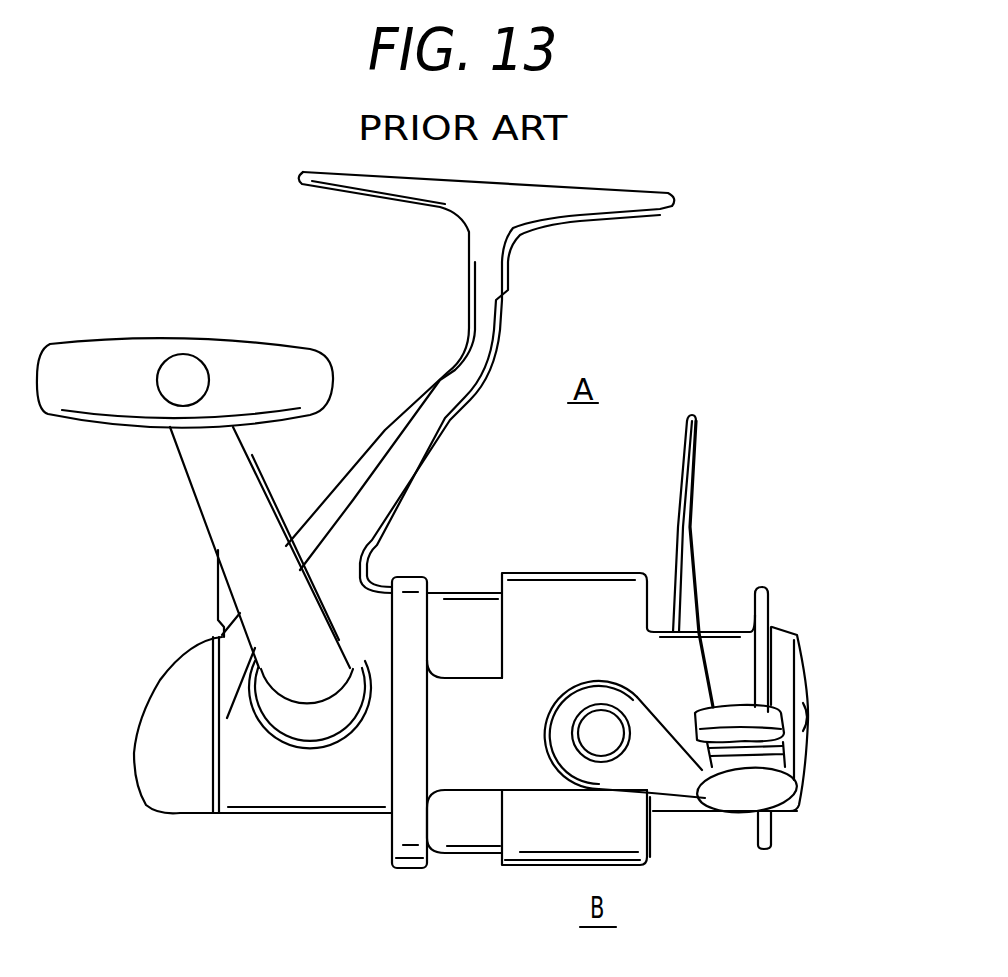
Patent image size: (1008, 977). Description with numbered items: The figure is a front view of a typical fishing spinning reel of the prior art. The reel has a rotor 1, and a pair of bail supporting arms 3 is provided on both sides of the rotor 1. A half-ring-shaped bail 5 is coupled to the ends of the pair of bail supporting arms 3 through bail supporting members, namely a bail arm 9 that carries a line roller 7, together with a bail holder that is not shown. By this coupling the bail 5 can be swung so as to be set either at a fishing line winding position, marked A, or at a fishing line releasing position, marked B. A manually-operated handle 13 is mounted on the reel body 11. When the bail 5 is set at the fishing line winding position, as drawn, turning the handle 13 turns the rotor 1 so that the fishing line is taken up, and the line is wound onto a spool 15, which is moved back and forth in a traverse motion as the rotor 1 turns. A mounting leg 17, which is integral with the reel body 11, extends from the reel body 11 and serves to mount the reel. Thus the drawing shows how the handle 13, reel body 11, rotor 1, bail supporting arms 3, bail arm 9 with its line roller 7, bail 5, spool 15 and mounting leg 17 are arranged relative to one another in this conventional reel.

The rotor 1 is at (468, 598).
The bail supporting arms 3 is at (479, 772).
The bail 5 is at (698, 418).
The line roller 7 is at (757, 752).
The bail arm 9 is at (670, 788).
The reel body 11 is at (277, 797).
The handle 13 is at (208, 468).
The spool 15 is at (729, 643).
The mounting leg 17 is at (507, 293).